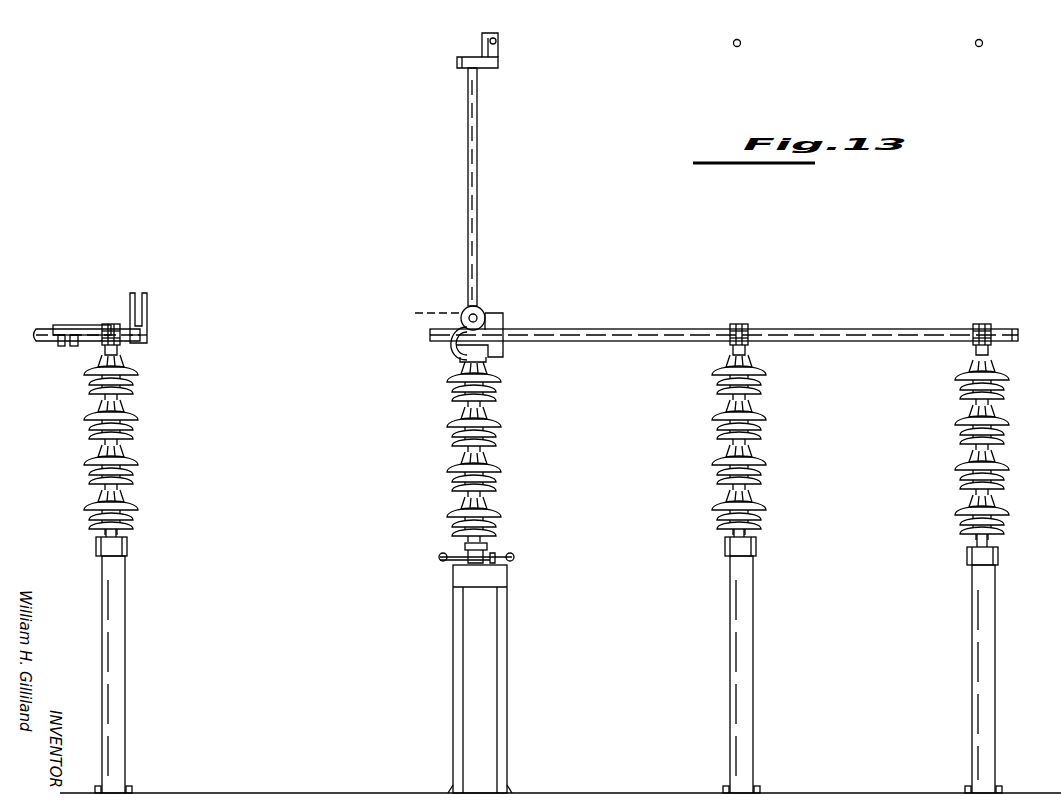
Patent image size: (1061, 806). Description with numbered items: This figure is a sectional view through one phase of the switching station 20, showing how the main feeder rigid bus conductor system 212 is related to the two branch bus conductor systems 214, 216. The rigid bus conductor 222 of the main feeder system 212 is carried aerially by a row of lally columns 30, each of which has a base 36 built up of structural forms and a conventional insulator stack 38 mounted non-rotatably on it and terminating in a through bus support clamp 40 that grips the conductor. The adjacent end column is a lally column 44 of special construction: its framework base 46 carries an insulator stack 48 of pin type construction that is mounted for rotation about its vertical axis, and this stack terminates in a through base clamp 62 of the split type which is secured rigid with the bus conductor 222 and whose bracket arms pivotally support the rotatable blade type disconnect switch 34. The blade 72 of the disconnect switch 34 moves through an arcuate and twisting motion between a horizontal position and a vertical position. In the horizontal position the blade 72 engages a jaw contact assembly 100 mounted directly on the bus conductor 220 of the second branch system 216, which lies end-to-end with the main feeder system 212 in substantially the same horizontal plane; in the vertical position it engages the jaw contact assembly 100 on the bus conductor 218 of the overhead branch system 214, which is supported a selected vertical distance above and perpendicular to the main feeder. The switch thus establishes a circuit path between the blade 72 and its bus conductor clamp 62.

The switching station 20 is at (724, 317).
The first series of lally columns 30 is at (567, 451).
The rotatable blade type disconnect switch 34 is at (483, 215).
The base 36 is at (125, 592).
The insulator stack 38 is at (137, 417).
The through bus support clamp 40 is at (112, 324).
The lally column of special construction 44 is at (502, 518).
The framework base 46 is at (507, 614).
The insulator stack of pin type construction 48 is at (500, 385).
The through base clamp 62 is at (504, 325).
The blade 72 is at (478, 120).
The jaw contact assembly 100 is at (147, 300).
The main feeder rigid bus conductor system 212 is at (724, 328).
The branch bus conductor system 214 is at (990, 42).
The second branch bus conductor system 216 is at (88, 325).
The bus conductor 218 is at (766, 57).
The bus conductor 220 is at (60, 341).
The bus conductor 222 is at (592, 341).